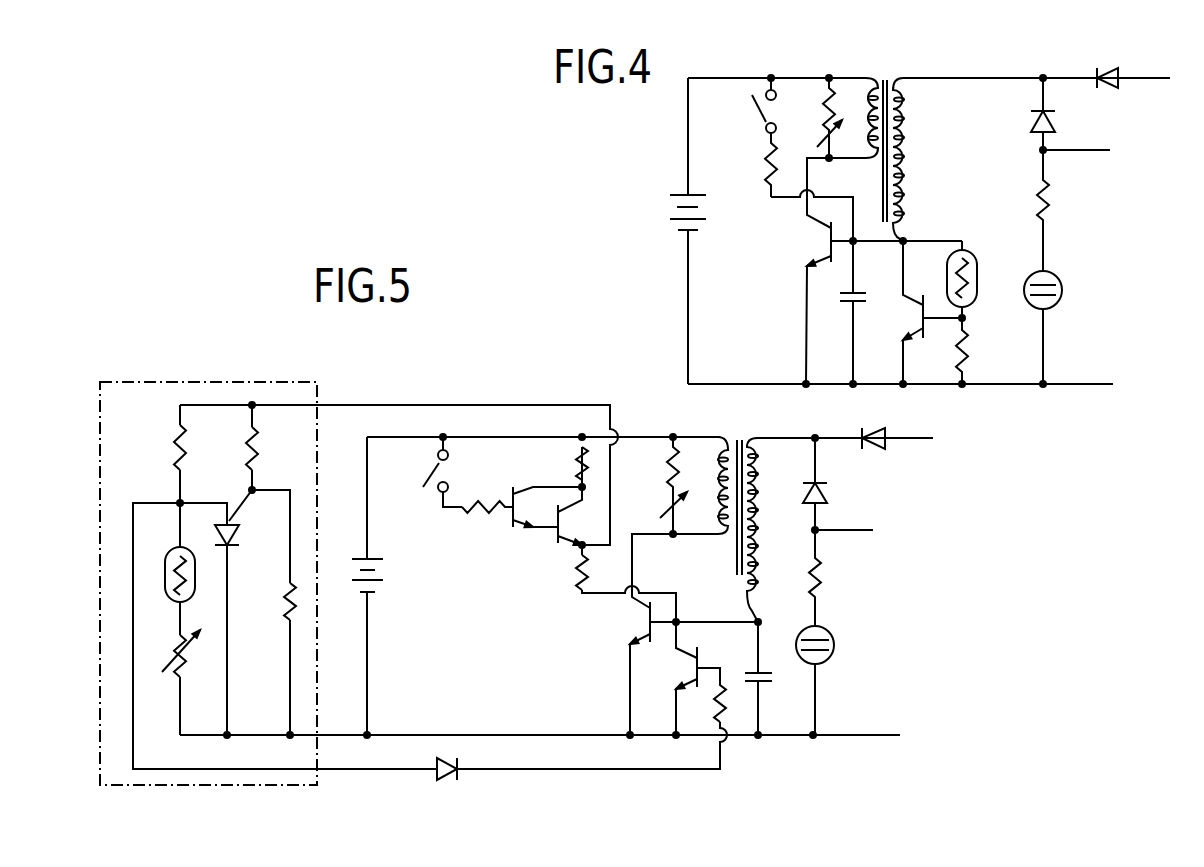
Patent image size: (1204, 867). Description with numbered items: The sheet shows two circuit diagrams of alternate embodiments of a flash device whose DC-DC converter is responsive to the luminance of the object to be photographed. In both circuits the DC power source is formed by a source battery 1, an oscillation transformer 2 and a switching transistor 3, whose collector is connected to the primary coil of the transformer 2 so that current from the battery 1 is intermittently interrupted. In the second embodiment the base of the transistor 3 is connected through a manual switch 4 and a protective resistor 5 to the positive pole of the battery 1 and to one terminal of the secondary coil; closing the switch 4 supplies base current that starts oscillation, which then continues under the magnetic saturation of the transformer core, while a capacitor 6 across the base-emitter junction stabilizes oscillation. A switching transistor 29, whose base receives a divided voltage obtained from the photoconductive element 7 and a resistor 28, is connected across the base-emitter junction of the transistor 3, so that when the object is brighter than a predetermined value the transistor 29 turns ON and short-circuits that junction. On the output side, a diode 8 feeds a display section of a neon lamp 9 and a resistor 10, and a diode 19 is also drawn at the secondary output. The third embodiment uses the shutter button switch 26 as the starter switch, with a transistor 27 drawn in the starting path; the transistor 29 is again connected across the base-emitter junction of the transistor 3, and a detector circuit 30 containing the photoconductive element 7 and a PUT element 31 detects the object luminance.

In FIG. 4, the source battery 1 is at (671, 218).
In FIG. 5, the source battery 1 is at (387, 580).
In FIG. 4, the oscillation transformer 2 is at (885, 75).
In FIG. 5, the oscillation transformer 2 is at (740, 432).
In FIG. 4, the switching transistor 3 is at (816, 253).
In FIG. 5, the switching transistor 3 is at (641, 634).
In FIG. 4, the manual switch 4 is at (757, 112).
In FIG. 4, the protective resistor 5 is at (757, 152).
In FIG. 4, the capacitor 6 is at (845, 305).
In FIG. 5, the capacitor 6 is at (772, 680).
In FIG. 4, the photoconductive element 7 is at (977, 277).
In FIG. 5, the photoconductive element 7 is at (168, 570).
In FIG. 4, the diode 8 is at (1030, 122).
In FIG. 5, the diode 8 is at (830, 497).
In FIG. 4, the neon lamp 9 is at (1063, 290).
In FIG. 5, the neon lamp 9 is at (835, 648).
In FIG. 4, the resistor 10 is at (1050, 200).
In FIG. 5, the resistor 10 is at (830, 585).
In FIG. 4, the diode 19 is at (1108, 68).
In FIG. 5, the diode 19 is at (875, 452).
In FIG. 5, the switch 26 is at (445, 473).
In FIG. 5, the transistor 27 is at (540, 513).
In FIG. 4, the resistor 28 is at (968, 347).
In FIG. 4, the switching transistor 29 is at (912, 334).
In FIG. 5, the switching transistor 29 is at (680, 682).
In FIG. 5, the detector circuit 30 is at (217, 382).
In FIG. 5, the PUT element 31 is at (238, 537).